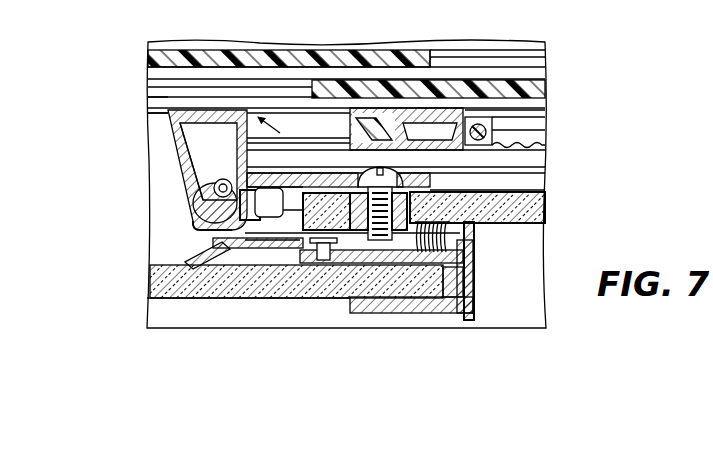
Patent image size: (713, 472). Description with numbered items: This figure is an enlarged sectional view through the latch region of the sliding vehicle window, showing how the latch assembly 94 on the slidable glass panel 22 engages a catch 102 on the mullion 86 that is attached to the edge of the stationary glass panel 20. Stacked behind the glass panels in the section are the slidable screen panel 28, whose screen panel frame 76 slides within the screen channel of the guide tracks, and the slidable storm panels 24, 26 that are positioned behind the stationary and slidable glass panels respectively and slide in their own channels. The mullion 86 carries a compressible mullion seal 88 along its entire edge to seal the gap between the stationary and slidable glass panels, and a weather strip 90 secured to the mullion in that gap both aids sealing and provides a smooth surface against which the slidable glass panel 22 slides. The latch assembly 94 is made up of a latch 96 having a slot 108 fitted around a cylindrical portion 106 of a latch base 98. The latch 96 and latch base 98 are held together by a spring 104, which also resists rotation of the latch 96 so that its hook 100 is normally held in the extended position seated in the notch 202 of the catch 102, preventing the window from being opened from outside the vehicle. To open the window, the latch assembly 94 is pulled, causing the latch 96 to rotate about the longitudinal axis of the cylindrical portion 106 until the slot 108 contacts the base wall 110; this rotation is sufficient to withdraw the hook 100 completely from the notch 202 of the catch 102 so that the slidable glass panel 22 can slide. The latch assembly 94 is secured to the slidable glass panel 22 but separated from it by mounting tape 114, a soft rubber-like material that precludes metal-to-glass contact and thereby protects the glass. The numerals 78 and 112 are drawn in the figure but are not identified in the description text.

The stationary glass panel 20 is at (173, 283).
The slidable glass panel 22 is at (538, 203).
The storm panel 24 is at (255, 53).
The storm panel 26 is at (535, 90).
The screen panel 28 is at (523, 147).
The screen panel frame 76 is at (408, 118).
The fastening screw 78 is at (480, 132).
The mullion 86 is at (418, 306).
The mullion seal 88 is at (473, 293).
The weather strip 90 is at (440, 233).
The latch assembly 94 is at (172, 160).
The latch 96 is at (205, 113).
The latch base 98 is at (197, 225).
The hook 100 is at (268, 251).
The catch 102 is at (210, 255).
The spring 104 is at (268, 235).
The cylindrical portion 106 is at (217, 208).
The slot 108 is at (220, 178).
The base wall 110 is at (187, 177).
The screw shaft 112 is at (366, 166).
The mounting tape 114 is at (432, 188).
The notch 202 is at (258, 237).